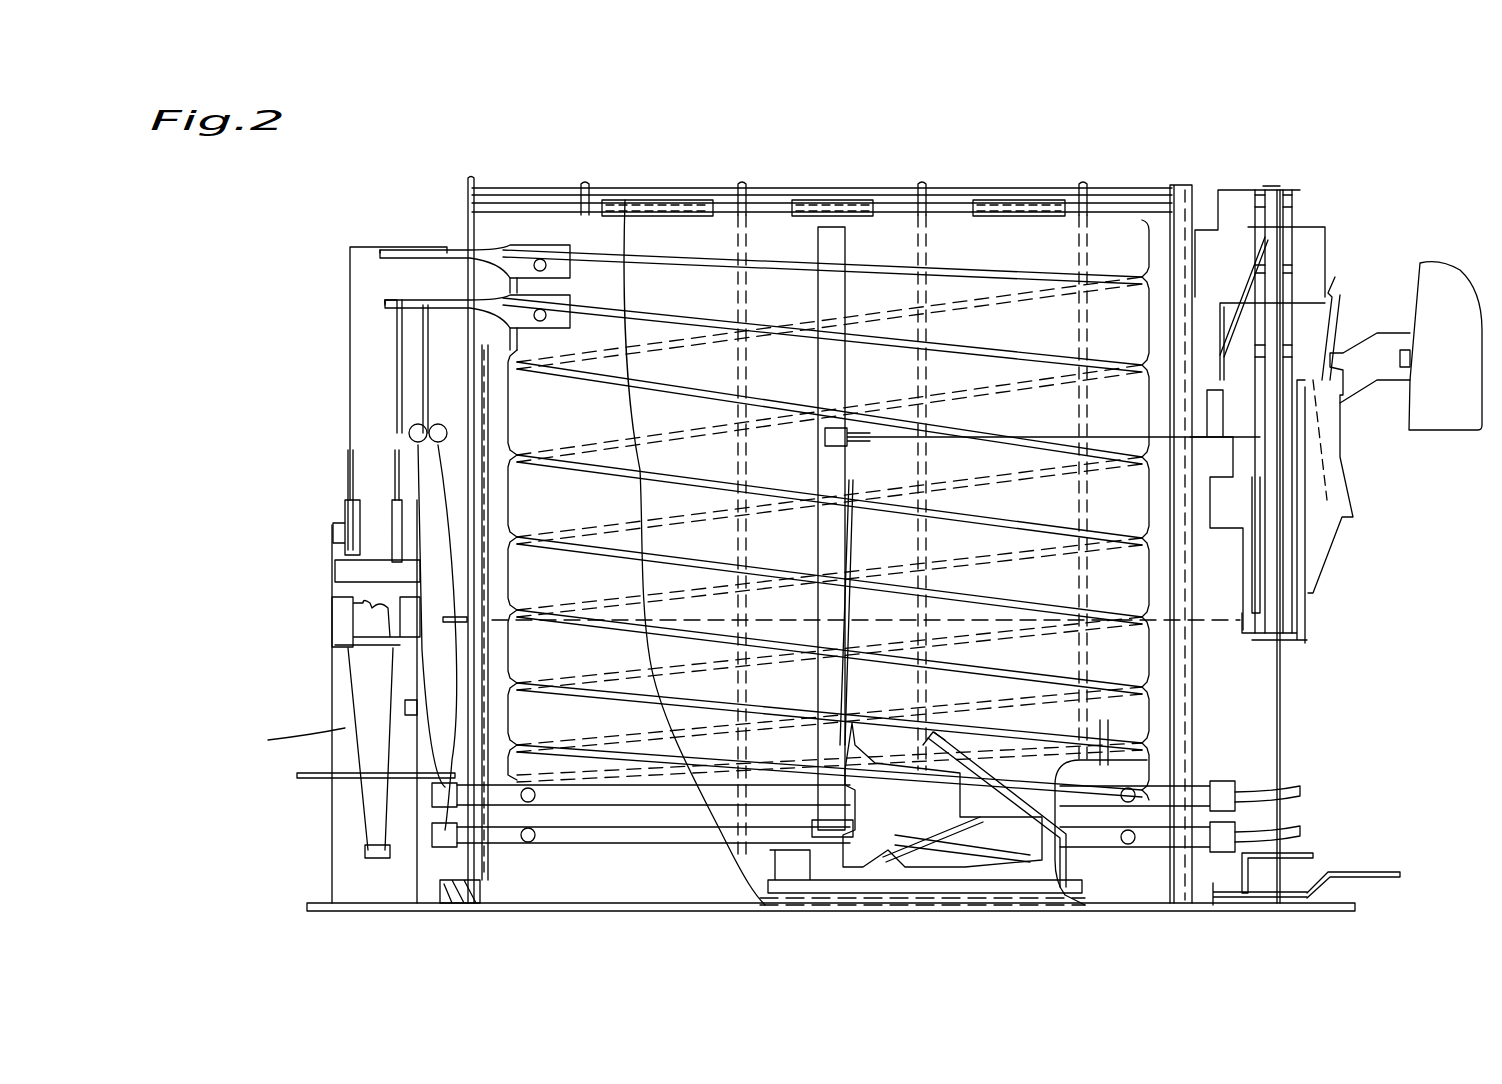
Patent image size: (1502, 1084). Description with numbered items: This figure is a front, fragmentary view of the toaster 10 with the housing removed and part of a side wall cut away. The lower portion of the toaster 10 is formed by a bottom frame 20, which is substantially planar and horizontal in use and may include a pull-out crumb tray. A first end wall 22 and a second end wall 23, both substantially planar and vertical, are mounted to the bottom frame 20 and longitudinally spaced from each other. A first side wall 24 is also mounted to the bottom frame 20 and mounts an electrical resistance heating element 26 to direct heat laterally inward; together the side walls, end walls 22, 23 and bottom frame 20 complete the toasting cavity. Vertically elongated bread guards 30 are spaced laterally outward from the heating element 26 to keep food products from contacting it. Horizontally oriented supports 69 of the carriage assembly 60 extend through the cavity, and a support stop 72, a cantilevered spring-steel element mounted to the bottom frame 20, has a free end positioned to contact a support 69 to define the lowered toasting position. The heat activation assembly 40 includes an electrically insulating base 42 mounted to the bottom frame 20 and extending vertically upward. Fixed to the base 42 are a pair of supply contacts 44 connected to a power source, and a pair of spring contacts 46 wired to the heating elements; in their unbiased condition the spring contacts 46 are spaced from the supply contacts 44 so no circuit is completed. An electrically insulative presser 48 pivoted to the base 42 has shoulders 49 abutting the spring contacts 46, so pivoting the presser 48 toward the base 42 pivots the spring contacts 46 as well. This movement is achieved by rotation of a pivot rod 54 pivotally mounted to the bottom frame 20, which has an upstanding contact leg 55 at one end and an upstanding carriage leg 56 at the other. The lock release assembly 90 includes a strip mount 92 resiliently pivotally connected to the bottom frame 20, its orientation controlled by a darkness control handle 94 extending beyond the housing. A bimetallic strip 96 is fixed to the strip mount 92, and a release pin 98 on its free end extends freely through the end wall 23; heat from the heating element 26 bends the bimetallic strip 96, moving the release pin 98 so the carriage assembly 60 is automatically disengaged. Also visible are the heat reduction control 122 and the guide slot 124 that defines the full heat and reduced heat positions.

The toaster 10 is at (868, 168).
The bottom frame 20 is at (660, 915).
The first end wall 22 is at (468, 186).
The second end wall 23 is at (1195, 208).
The first side wall 24 is at (990, 225).
The electrical resistance heating element 26 is at (1048, 272).
The bread guard 30 is at (740, 230).
The heat activation assembly 40 is at (295, 623).
The electrically insulating base 42 is at (340, 855).
The supply contact 44 is at (410, 705).
The spring contact 46 is at (410, 600).
The presser 48 is at (375, 727).
The shoulder 49 is at (405, 640).
The pivot rod 54 is at (1015, 905).
The contact leg 55 is at (300, 790).
The carriage leg 56 is at (1312, 862).
The carriage assembly 60 is at (1368, 410).
The support 69 is at (960, 612).
The support stop 72 is at (920, 740).
The lock release assembly 90 is at (805, 540).
The strip mount 92 is at (942, 795).
The darkness control handle 94 is at (1395, 875).
The bimetallic strip 96 is at (851, 535).
The release pin 98 is at (1062, 432).
The heat reduction control 122 is at (1303, 790).
The guide slot 124 is at (1303, 830).